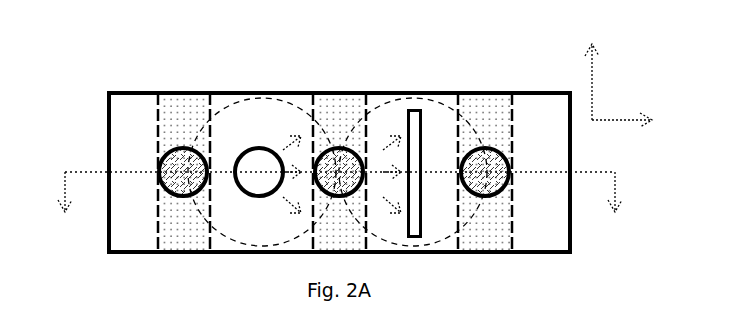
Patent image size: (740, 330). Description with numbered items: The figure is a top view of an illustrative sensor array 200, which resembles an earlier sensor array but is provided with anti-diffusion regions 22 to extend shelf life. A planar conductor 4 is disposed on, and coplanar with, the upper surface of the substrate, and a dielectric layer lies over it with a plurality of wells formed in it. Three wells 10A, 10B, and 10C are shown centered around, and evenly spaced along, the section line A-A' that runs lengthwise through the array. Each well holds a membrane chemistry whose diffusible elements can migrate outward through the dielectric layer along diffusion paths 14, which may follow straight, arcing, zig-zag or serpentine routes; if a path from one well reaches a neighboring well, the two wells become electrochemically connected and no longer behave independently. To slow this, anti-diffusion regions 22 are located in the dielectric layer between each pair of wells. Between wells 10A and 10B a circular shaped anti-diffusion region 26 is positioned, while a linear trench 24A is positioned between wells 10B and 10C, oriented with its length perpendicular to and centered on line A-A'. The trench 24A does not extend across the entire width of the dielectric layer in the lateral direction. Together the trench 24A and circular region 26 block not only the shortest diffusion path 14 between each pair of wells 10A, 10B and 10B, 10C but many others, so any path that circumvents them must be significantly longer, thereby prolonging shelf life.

The sensor array 200 is at (362, 173).
The planar conductor 4 is at (238, 91).
The well 10A is at (177, 148).
The well 10B is at (345, 147).
The well 10C is at (490, 152).
The diffusion path 14 is at (286, 104).
The anti-diffusion region 22 is at (339, 221).
The circular shaped anti-diffusion region 26 is at (260, 197).
The linear trench 24A is at (420, 237).